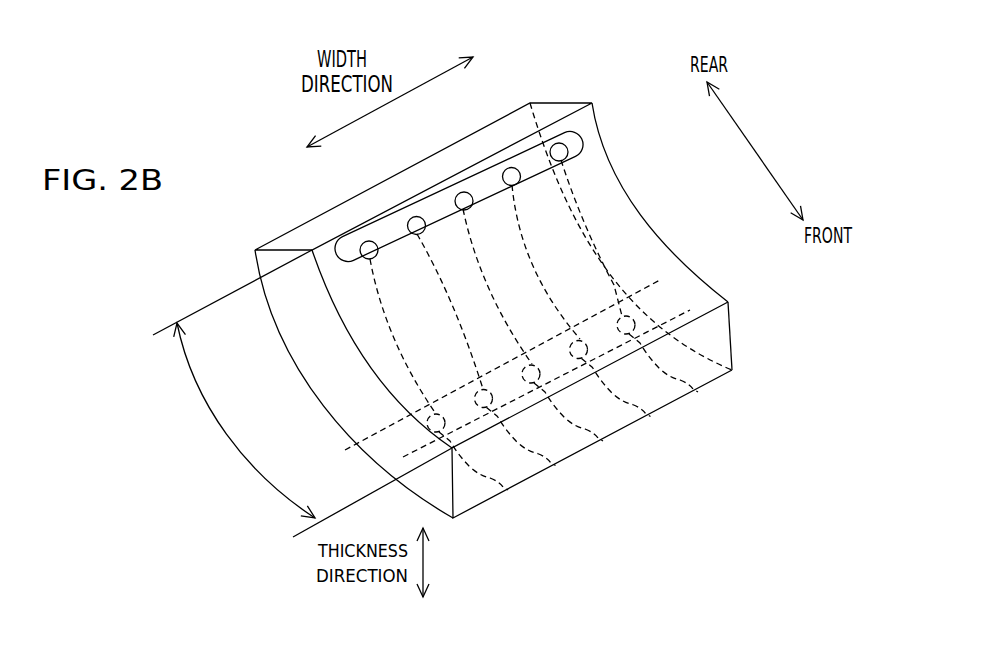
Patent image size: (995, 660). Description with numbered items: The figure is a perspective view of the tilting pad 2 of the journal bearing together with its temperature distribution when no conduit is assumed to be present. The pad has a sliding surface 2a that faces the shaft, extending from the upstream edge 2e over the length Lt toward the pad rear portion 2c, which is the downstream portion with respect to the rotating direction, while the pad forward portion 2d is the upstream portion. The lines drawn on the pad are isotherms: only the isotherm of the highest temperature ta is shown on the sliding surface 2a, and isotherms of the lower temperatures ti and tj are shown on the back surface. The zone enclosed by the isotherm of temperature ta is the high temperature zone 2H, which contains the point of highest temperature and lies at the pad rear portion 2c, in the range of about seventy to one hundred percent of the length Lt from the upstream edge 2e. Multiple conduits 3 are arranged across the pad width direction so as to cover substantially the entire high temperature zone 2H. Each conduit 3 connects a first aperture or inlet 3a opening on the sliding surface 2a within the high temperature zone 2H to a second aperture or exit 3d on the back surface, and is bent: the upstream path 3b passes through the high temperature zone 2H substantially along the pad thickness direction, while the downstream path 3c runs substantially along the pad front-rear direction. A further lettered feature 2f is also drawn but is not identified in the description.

The tilting pad 2 is at (623, 150).
The sliding surface 2a is at (606, 187).
The pad rear portion 2c is at (602, 130).
The pad forward portion 2d is at (720, 291).
The upstream edge 2e is at (690, 322).
The left end face 2f is at (320, 243).
The high temperature zone 2H is at (488, 182).
The conduit 3 is at (489, 300).
The first aperture (inlet) 3a is at (368, 241).
The upstream path 3b is at (371, 263).
The downstream path 3c is at (412, 378).
The second aperture (exit) 3d is at (508, 490).
The temperature ta is at (594, 112).
The temperature ti is at (372, 420).
The temperature tj is at (403, 457).
The length Lt is at (302, 393).